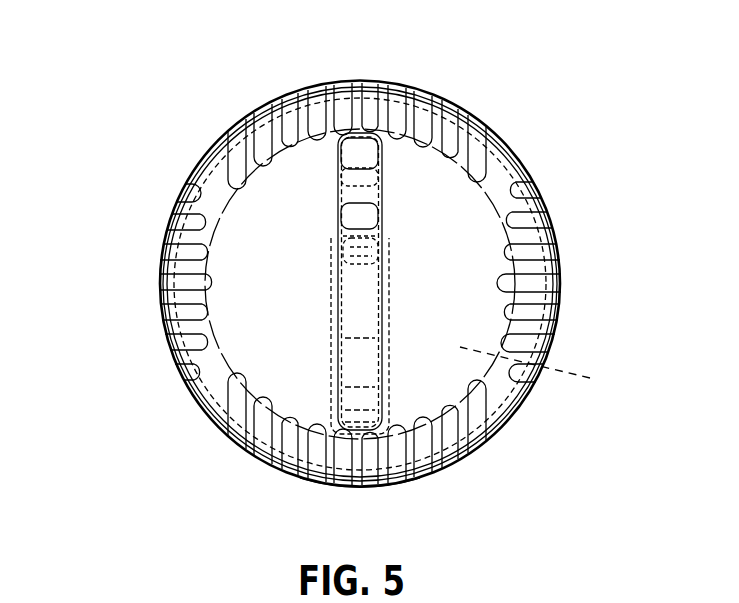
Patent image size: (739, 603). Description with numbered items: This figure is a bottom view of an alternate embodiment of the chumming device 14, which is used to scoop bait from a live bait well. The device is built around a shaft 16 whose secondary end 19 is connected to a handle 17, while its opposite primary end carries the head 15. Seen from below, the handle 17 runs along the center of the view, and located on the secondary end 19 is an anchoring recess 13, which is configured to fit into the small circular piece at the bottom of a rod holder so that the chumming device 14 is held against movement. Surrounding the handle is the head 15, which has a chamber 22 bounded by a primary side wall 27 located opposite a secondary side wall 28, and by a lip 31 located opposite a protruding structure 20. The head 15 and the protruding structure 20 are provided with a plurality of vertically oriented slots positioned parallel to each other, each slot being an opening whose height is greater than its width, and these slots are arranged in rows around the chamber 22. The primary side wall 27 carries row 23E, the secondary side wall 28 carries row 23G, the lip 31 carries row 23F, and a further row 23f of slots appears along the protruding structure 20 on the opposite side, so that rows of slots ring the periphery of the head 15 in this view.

The chumming device 14 is at (166, 162).
The lip 31 is at (352, 85).
The secondary side wall 28 is at (552, 305).
The primary side wall 27 is at (178, 286).
The head 15 is at (493, 147).
The protruding structure 20 is at (372, 484).
The row of plurality of vertically oriented slots 23F is at (423, 118).
The row of plurality of vertically oriented slots 23f is at (342, 462).
The row of plurality of vertically oriented slots 23E is at (165, 289).
The row of plurality of vertically oriented slots 23G is at (538, 285).
The chamber 22 is at (540, 369).
The shaft 16 is at (362, 337).
The anchoring recess 13 is at (355, 195).
The secondary end 19 is at (375, 238).
The handle 17 is at (368, 250).